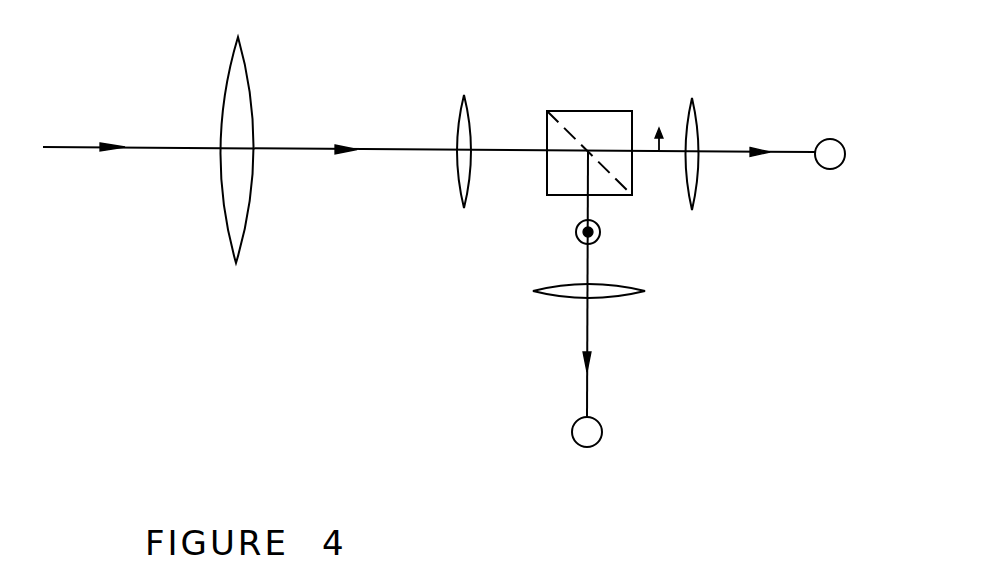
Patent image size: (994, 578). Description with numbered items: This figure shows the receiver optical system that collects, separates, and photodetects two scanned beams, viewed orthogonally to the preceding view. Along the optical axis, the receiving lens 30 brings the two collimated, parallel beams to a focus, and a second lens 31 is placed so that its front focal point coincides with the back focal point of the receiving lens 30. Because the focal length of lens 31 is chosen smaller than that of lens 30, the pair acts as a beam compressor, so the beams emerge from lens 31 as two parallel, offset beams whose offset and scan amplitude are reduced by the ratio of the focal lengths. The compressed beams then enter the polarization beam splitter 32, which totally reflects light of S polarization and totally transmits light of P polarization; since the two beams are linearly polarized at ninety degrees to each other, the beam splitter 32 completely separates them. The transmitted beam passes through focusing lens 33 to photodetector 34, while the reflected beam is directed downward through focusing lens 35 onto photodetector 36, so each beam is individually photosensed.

The receiving lens 30 is at (233, 63).
The lens 31 is at (462, 102).
The polarization beam splitter 32 is at (553, 110).
The focusing lens 33 is at (688, 107).
The photodetector 34 is at (828, 138).
The focusing lens 35 is at (623, 287).
The photodetector 36 is at (603, 427).